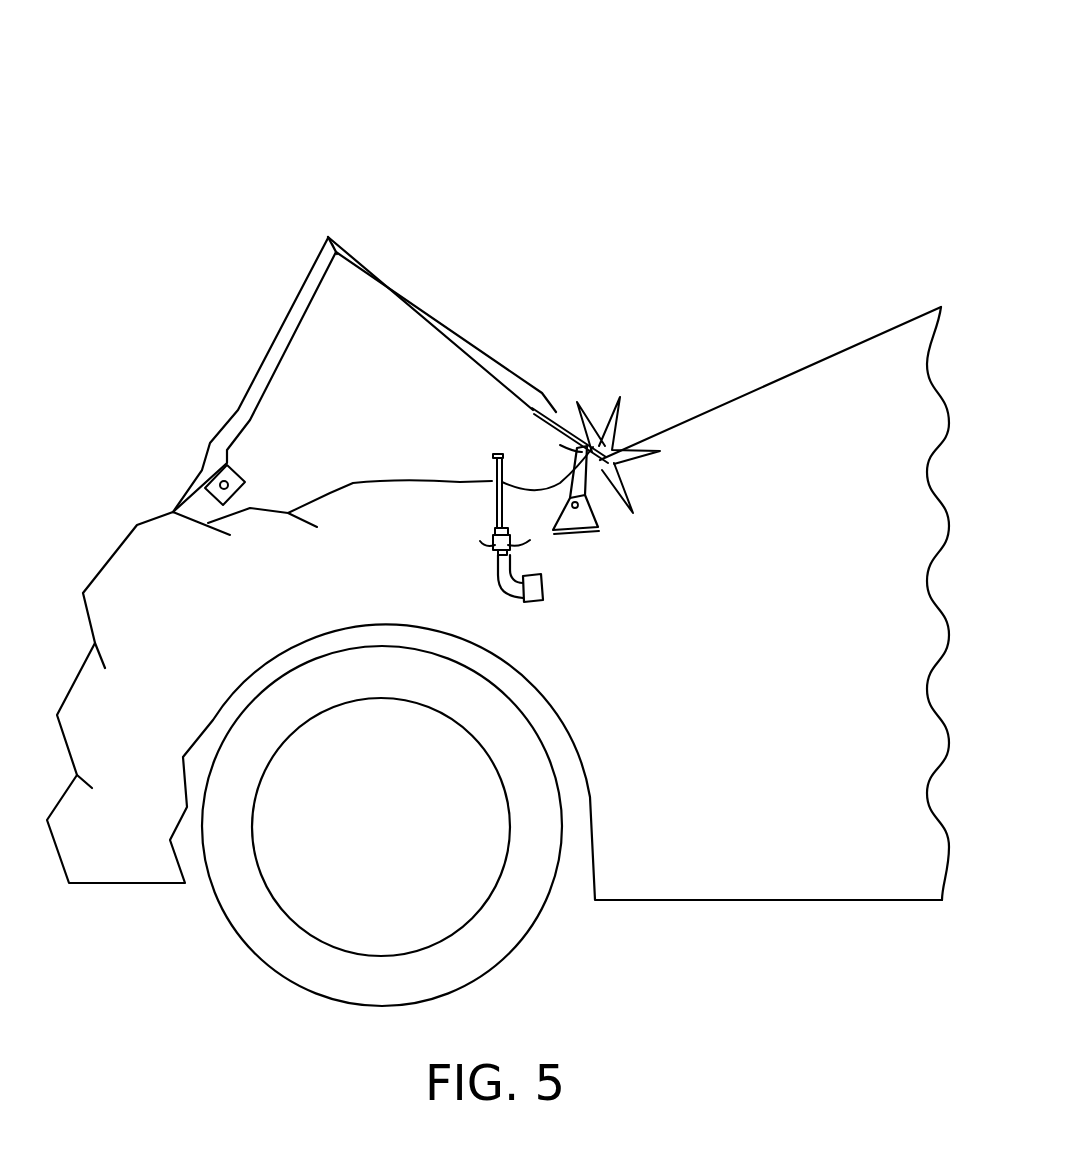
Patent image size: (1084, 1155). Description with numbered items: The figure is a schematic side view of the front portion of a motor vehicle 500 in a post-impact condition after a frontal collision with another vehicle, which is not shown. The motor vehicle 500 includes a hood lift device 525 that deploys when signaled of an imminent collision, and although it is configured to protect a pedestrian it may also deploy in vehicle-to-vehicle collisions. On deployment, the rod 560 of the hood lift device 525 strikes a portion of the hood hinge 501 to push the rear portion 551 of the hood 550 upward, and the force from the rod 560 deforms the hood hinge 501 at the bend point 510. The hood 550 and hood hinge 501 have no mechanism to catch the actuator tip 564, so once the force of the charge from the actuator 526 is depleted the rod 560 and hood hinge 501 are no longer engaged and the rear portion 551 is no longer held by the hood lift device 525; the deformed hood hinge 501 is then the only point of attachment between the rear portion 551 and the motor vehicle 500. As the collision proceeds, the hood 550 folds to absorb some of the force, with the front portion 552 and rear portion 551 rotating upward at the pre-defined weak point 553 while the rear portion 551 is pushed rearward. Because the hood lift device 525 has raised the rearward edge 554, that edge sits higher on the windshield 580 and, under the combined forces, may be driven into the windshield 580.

The motor vehicle 500 is at (733, 122).
The hood hinge 501 is at (620, 542).
The bend point 510 is at (560, 445).
The hood lift device 525 is at (476, 587).
The actuator 526 is at (523, 602).
The hood 550 is at (349, 283).
The rear portion 551 is at (486, 292).
The front portion 552 is at (205, 352).
The pre-defined weak point 553 is at (330, 237).
The rearward edge 554 is at (598, 435).
The rod 560 is at (495, 502).
The actuator tip 564 is at (492, 458).
The windshield 580 is at (832, 320).